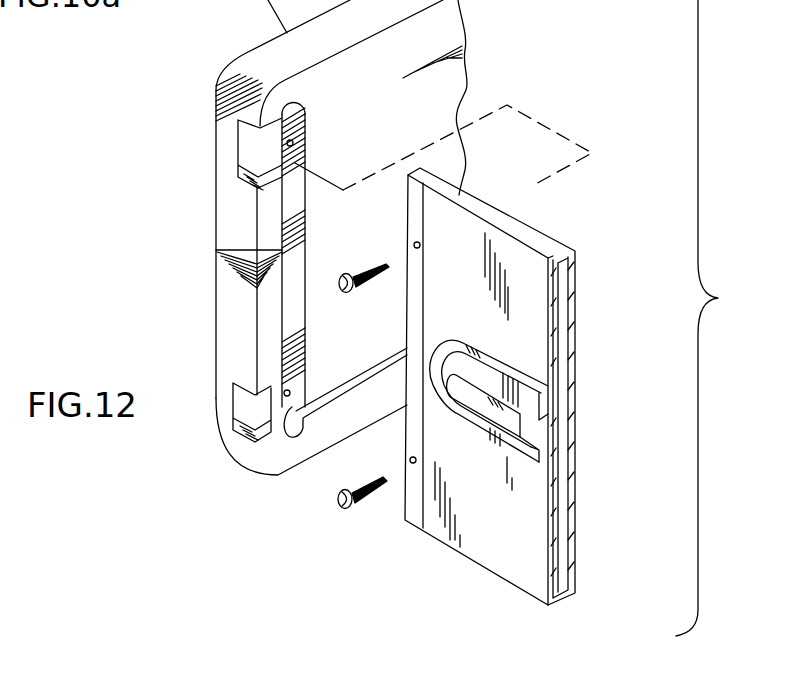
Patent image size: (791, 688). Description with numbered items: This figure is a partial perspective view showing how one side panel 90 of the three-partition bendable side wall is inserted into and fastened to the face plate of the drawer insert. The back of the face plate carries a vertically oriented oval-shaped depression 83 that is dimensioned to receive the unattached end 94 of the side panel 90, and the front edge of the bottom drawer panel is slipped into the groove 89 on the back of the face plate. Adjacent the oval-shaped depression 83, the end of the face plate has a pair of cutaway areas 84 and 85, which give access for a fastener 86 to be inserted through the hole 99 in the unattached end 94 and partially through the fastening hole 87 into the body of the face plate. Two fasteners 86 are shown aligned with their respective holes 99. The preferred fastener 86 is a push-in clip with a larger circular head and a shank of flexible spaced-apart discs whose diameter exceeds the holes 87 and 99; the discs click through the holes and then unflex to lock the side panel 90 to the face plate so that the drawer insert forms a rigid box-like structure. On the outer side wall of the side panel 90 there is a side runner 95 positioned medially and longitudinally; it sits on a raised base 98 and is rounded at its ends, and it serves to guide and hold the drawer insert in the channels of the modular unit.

The oval-shaped depression 83 is at (278, 236).
The cutaway area 84 is at (283, 152).
The cutaway area 85 is at (262, 408).
The fastener 86 is at (340, 283).
The fastening hole 87 is at (287, 147).
The groove 89 is at (252, 445).
The side panel 90 is at (543, 232).
The unattached end 94 is at (463, 150).
The side runner 95 is at (522, 432).
The raised base 98 is at (510, 363).
The hole 99 is at (420, 244).